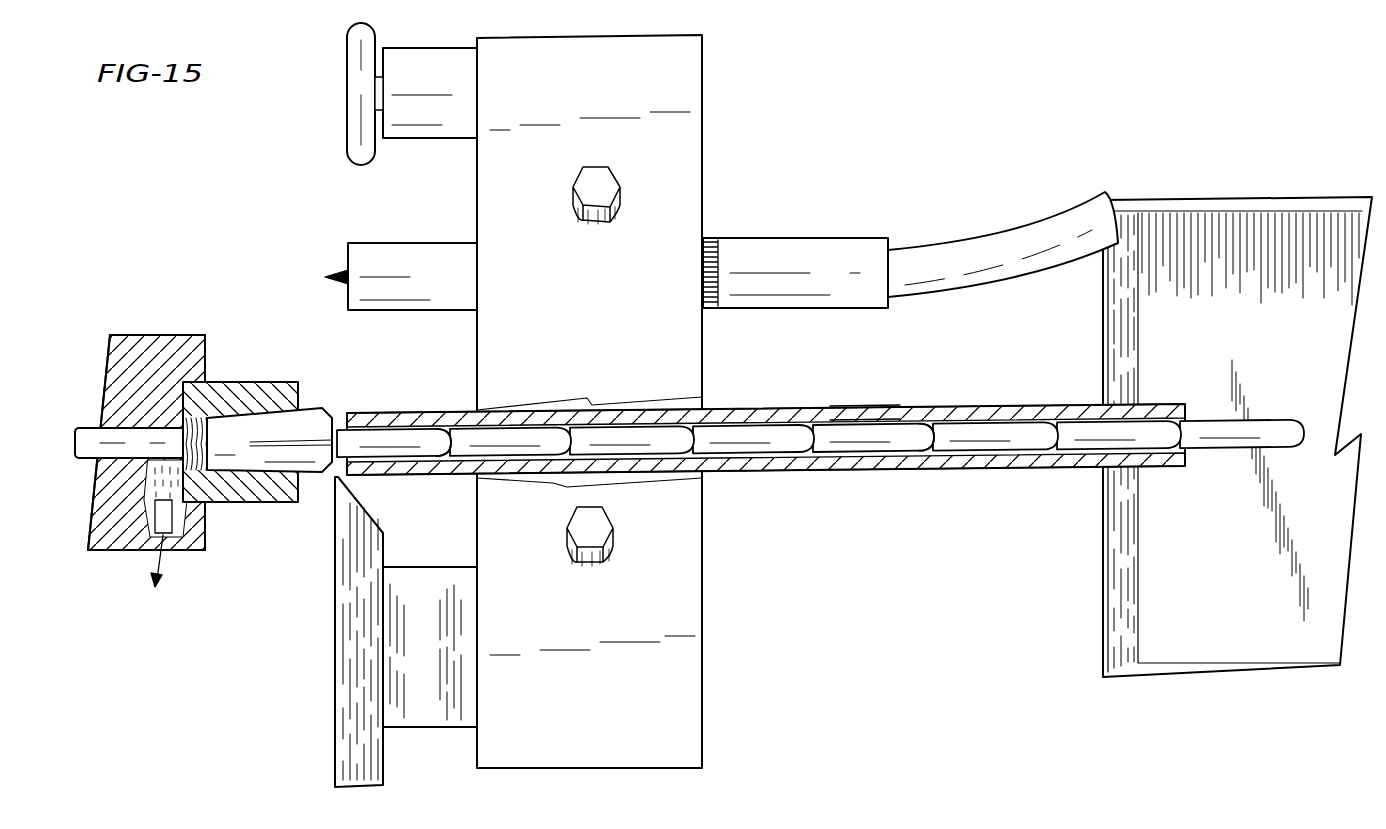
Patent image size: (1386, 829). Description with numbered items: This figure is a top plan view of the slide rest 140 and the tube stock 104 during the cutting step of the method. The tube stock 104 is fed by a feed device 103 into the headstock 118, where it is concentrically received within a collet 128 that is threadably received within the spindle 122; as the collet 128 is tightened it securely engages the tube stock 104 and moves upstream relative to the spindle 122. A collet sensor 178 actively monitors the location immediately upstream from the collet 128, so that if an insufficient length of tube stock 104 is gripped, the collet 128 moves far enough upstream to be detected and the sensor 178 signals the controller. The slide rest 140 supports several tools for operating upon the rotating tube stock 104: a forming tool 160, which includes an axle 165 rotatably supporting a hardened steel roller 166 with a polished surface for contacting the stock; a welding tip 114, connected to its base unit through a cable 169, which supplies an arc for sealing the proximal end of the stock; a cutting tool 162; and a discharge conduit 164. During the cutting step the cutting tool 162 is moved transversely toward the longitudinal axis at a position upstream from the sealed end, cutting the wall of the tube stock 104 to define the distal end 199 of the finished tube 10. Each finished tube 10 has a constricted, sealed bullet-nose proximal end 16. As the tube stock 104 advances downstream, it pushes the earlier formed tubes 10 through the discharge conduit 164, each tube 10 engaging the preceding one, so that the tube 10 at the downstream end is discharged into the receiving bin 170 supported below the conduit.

The tube 10 is at (385, 440).
The proximal end 16 is at (450, 430).
The feed device 103 is at (203, 433).
The tube stock 104 is at (107, 433).
The welding tip 114 is at (803, 240).
The headstock 118 is at (122, 552).
The spindle 122 is at (232, 381).
The collet 128 is at (272, 423).
The slide rest 140 is at (705, 97).
The forming tool 160 is at (355, 113).
The cutting tool 162 is at (335, 672).
The discharge conduit 164 is at (862, 408).
The axle 165 is at (385, 112).
The roller 166 is at (355, 108).
The cable 169 is at (1000, 234).
The receiving bin 170 is at (1233, 364).
The collet sensor 178 is at (165, 515).
The distal end 199 is at (333, 412).